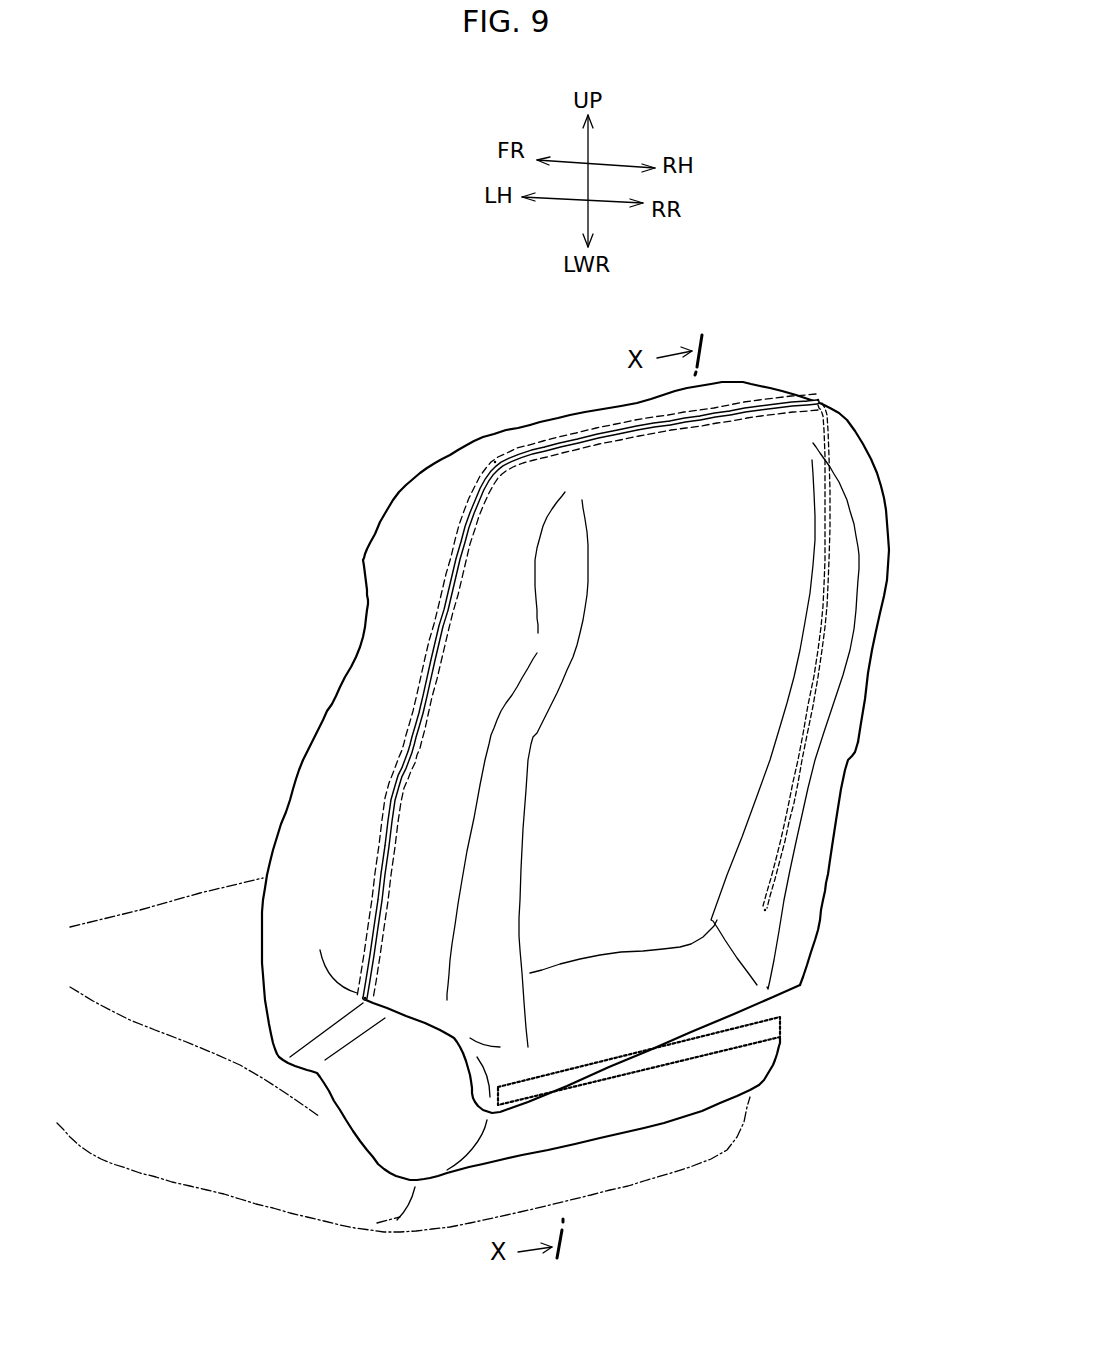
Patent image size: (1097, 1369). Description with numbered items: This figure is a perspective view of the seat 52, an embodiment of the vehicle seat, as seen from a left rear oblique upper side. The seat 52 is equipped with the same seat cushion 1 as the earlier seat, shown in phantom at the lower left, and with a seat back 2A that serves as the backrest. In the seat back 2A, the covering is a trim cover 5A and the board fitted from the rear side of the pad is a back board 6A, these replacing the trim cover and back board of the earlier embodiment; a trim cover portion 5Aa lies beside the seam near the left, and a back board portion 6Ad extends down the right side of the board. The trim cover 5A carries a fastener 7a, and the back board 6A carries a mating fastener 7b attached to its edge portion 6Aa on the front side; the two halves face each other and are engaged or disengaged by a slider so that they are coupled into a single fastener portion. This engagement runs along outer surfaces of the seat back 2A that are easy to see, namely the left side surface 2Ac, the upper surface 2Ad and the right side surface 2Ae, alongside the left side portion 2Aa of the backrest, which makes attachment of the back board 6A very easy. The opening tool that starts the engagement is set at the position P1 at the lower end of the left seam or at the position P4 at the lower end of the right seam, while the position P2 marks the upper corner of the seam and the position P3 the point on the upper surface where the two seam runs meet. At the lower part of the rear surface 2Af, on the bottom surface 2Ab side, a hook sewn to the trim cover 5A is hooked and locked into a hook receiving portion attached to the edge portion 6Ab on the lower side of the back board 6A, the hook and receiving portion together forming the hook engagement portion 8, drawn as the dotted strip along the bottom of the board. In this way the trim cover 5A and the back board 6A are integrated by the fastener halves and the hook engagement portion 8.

The seat cushion 1 is at (143, 933).
The seat back 2A is at (853, 402).
The left side portion of seat back 2Aa is at (327, 607).
The bottom surface 2Ab is at (607, 1147).
The left side surface 2Ac is at (365, 735).
The upper surface 2Ad is at (552, 410).
The right side surface 2Ae is at (858, 742).
The rear surface 2Af is at (700, 802).
The trim cover 5A is at (442, 492).
The trim cover portion 5Aa is at (410, 702).
The back board 6A is at (875, 565).
The edge portion 6Aa is at (432, 707).
The edge portion 6Ab is at (672, 1072).
The back board portion 6Ad is at (760, 657).
The fastener 7a is at (375, 865).
The fastener 7b is at (397, 870).
The hook engagement portion 8 is at (727, 1030).
The seat 52 is at (835, 293).
The position P1 is at (357, 995).
The position P2 is at (495, 462).
The position P3 is at (820, 393).
The position P4 is at (770, 912).